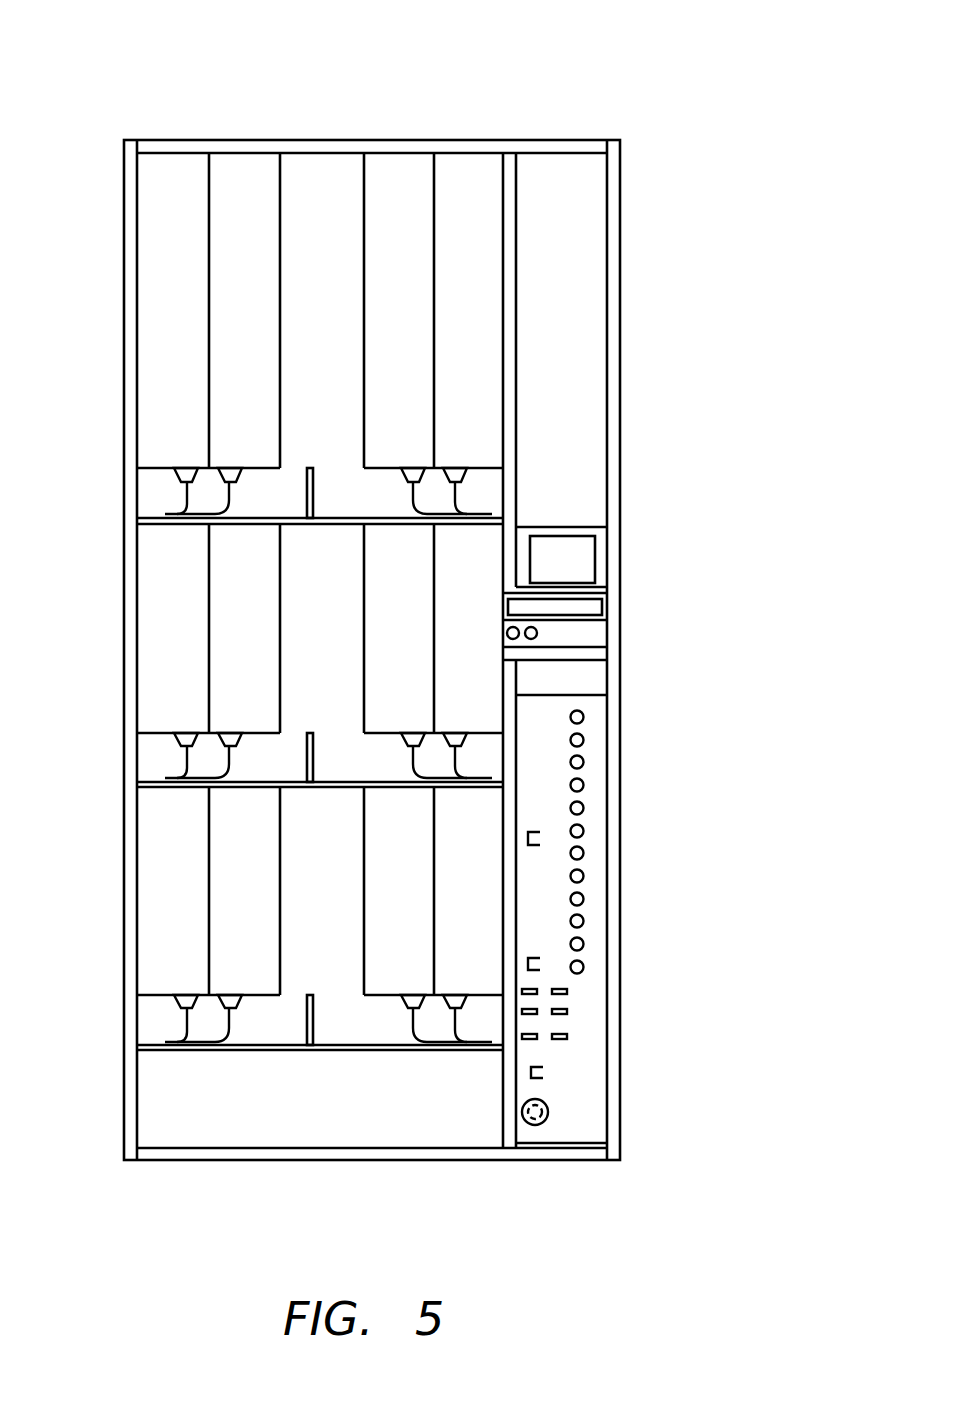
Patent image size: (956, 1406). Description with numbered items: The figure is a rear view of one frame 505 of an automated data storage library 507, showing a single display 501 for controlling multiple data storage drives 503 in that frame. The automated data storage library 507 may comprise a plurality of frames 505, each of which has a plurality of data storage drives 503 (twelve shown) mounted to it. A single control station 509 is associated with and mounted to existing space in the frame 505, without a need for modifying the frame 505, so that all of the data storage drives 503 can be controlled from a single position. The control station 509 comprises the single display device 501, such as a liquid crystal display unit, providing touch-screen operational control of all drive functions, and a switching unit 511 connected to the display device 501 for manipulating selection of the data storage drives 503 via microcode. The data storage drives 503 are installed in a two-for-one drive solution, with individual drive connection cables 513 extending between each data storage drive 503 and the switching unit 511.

The single display device 501 is at (600, 535).
The data storage drives 503 is at (180, 287).
The frame 505 is at (155, 139).
The automated data storage library 507 is at (439, 609).
The single control station 509 is at (656, 583).
The switching unit 511 is at (600, 610).
The drive connection cables 513 is at (183, 503).